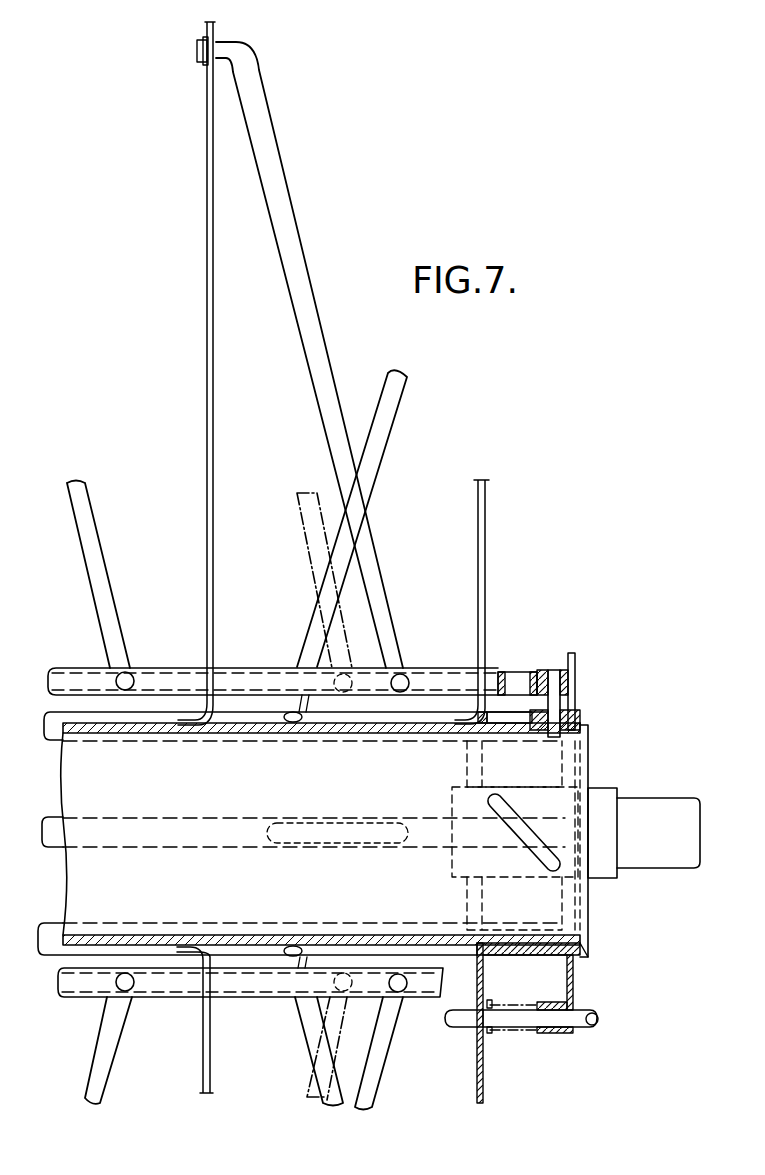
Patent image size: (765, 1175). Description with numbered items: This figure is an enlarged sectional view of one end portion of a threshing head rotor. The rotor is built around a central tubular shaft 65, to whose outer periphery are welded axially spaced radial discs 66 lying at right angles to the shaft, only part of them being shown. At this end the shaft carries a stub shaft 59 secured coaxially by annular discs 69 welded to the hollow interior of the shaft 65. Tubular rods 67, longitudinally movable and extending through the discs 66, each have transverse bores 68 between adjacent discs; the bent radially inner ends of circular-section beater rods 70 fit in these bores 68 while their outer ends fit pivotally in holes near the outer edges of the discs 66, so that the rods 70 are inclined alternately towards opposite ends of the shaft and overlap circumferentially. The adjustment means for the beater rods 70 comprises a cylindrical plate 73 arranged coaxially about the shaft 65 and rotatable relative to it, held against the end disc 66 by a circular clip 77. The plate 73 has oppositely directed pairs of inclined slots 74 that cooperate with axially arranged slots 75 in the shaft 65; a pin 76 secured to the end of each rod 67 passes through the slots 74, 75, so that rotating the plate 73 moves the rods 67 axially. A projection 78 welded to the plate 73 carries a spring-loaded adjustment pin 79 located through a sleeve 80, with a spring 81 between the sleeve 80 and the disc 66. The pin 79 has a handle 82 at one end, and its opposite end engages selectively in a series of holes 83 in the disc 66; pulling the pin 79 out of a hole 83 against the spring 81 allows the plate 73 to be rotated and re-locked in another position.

The stub shaft 59 is at (677, 802).
The central tubular shaft 65 is at (103, 788).
The radial discs 66 is at (208, 295).
The tubular rods 67 is at (268, 680).
The transverse bore 68 is at (116, 673).
The annular discs 69 is at (467, 762).
The beater rods 70 is at (263, 157).
The cylindrical plate 73 is at (575, 953).
The slots 74 is at (518, 715).
The axially arranged slots 75 is at (513, 728).
The pin 76 is at (552, 705).
The circular clip 77 is at (578, 948).
The projection 78 is at (575, 660).
The spring-loaded adjustment pin 79 is at (585, 1036).
The sleeve 80 is at (553, 1030).
The spring 81 is at (510, 1030).
The handle 82 is at (600, 1019).
The holes 83 is at (475, 1030).